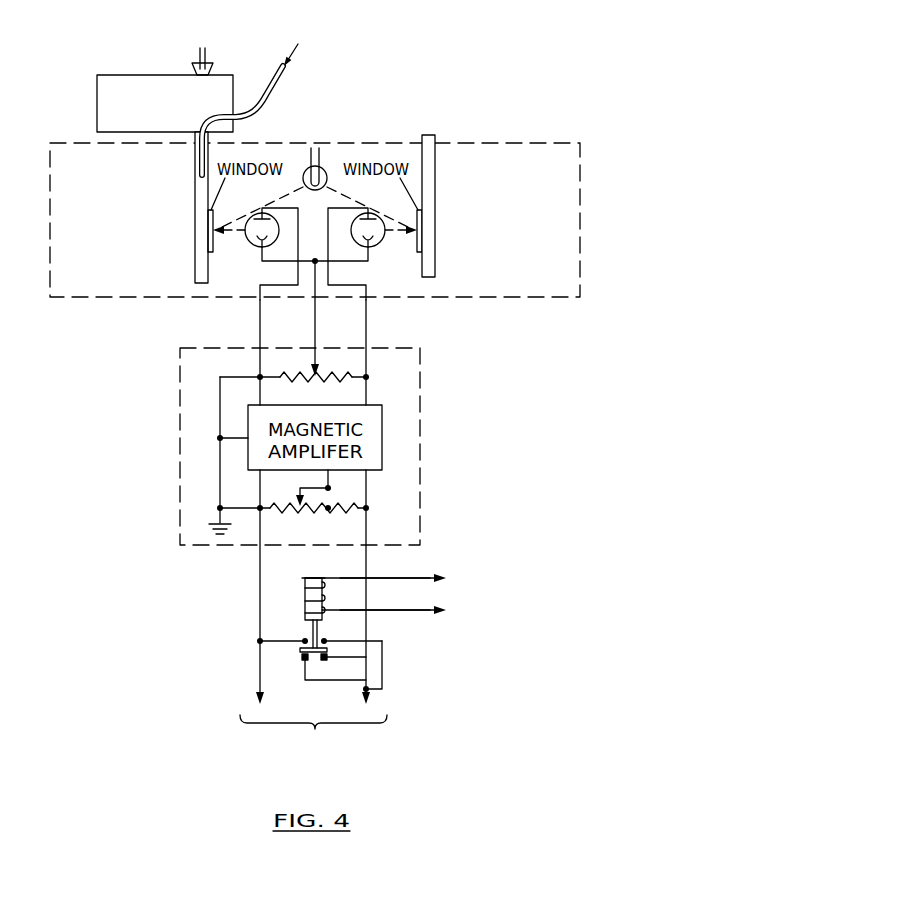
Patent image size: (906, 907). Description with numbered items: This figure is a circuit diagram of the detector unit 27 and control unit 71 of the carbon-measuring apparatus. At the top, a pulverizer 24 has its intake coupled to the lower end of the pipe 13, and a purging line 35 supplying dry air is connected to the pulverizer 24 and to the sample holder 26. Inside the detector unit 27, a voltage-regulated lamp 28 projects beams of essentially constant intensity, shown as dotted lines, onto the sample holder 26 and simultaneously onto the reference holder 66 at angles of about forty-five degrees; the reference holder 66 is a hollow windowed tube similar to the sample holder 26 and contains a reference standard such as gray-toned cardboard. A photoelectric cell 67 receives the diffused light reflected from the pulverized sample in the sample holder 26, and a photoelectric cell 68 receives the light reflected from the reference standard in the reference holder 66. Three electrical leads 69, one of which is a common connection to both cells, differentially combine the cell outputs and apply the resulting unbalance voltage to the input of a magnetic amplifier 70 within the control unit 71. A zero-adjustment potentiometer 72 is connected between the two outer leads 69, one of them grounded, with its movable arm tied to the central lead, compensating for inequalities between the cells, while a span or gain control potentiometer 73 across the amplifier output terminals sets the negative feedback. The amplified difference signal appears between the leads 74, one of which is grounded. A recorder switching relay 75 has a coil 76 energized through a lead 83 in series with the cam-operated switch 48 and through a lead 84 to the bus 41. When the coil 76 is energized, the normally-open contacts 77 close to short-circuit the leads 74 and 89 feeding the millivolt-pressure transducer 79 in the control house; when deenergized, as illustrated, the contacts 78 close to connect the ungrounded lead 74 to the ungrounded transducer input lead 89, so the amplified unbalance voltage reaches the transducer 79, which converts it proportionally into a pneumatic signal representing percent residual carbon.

The pipe 13 is at (207, 56).
The pulverizer 24 is at (112, 75).
The purging line 35 is at (273, 89).
The sample holder 26 is at (194, 200).
The reference holder 66 is at (436, 184).
The detector unit 27 is at (582, 210).
The lamp 28 is at (322, 166).
The photoelectric cell 67 is at (250, 243).
The photoelectric cell 68 is at (379, 243).
The electrical leads 69 is at (314, 320).
The magnetic amplifier 70 is at (247, 417).
The control unit 71 is at (423, 440).
The potentiometer 72 is at (333, 379).
The gain control potentiometer 73 is at (279, 512).
The leads 74 is at (259, 563).
The recorder switching relay 75 is at (326, 629).
The coil 76 is at (305, 592).
The normally-open contacts 77 is at (303, 640).
The contacts 78 is at (308, 661).
The lead 83 is at (387, 579).
The lead 84 is at (396, 612).
The transducer input lead 89 is at (333, 682).
The cam-operated switch 48 is at (540, 588).
The bus 41 is at (553, 620).
The millivolt-pressure transducer 79 is at (420, 762).